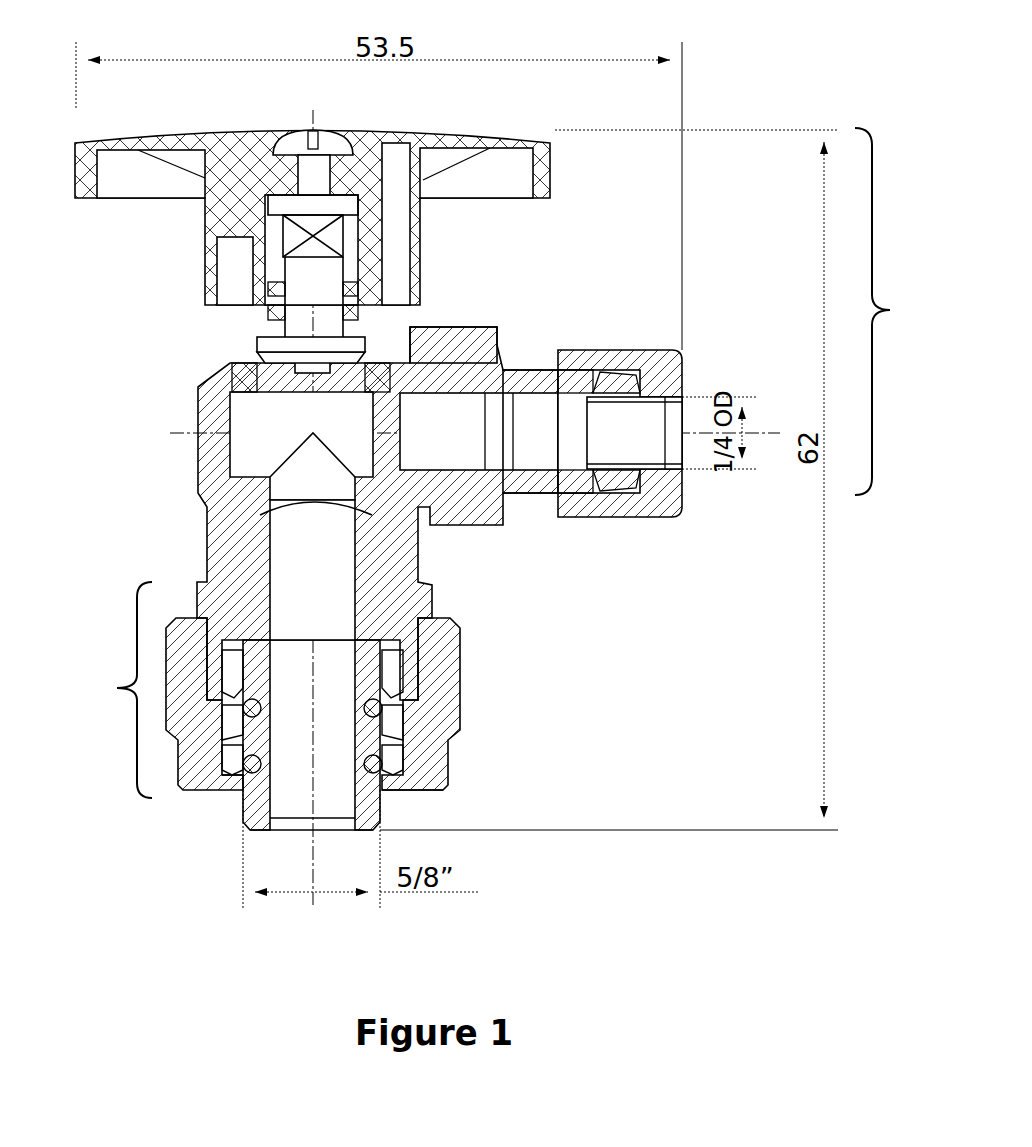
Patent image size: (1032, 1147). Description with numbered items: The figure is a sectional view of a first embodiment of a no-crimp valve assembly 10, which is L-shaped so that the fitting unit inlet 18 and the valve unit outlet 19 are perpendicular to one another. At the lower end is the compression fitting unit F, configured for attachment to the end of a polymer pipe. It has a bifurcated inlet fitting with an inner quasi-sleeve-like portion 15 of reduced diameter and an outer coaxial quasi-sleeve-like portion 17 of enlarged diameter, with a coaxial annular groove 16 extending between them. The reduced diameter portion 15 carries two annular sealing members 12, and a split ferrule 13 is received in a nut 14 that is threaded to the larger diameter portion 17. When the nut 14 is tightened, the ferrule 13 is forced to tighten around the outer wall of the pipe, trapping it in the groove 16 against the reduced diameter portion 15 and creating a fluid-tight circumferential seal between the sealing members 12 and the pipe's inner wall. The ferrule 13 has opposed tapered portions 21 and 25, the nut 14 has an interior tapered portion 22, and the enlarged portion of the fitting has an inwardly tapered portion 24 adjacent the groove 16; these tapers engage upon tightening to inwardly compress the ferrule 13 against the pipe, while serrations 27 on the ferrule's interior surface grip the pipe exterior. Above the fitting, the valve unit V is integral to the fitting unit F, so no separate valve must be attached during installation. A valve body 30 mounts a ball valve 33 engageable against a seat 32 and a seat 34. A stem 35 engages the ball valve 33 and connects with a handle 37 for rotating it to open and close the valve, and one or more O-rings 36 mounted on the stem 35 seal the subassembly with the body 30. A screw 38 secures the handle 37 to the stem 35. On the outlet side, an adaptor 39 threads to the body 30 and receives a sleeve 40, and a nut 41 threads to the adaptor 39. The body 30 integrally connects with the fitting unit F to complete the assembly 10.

The valve assembly 10 is at (130, 483).
The annular sealing members 12 is at (392, 692).
The split ferrule 13 is at (420, 750).
The nut 14 is at (450, 698).
The inner quasi-sleeve-like portion 15 is at (372, 792).
The coaxial annular groove 16 is at (233, 777).
The outer coaxial quasi-sleeve-like portion 17 is at (413, 642).
The fitting unit inlet 18 is at (292, 803).
The valve unit outlet 19 is at (650, 421).
The tapered portion 21 is at (222, 760).
The interior tapered portion 22 is at (415, 758).
The inwardly tapered portion 24 is at (380, 707).
The tapered portion 25 is at (213, 692).
The serrations 27 is at (230, 727).
The valve body 30 is at (205, 470).
The seat 32 is at (245, 375).
The ball valve 33 is at (335, 377).
The seat 34 is at (508, 352).
The stem 35 is at (300, 288).
The O-rings 36 is at (355, 312).
The handle 37 is at (72, 176).
The screw 38 is at (298, 147).
The adaptor 39 is at (556, 340).
The sleeve 40 is at (627, 388).
The nut 41 is at (640, 370).
The compression fitting unit F is at (122, 690).
The valve unit V is at (886, 311).